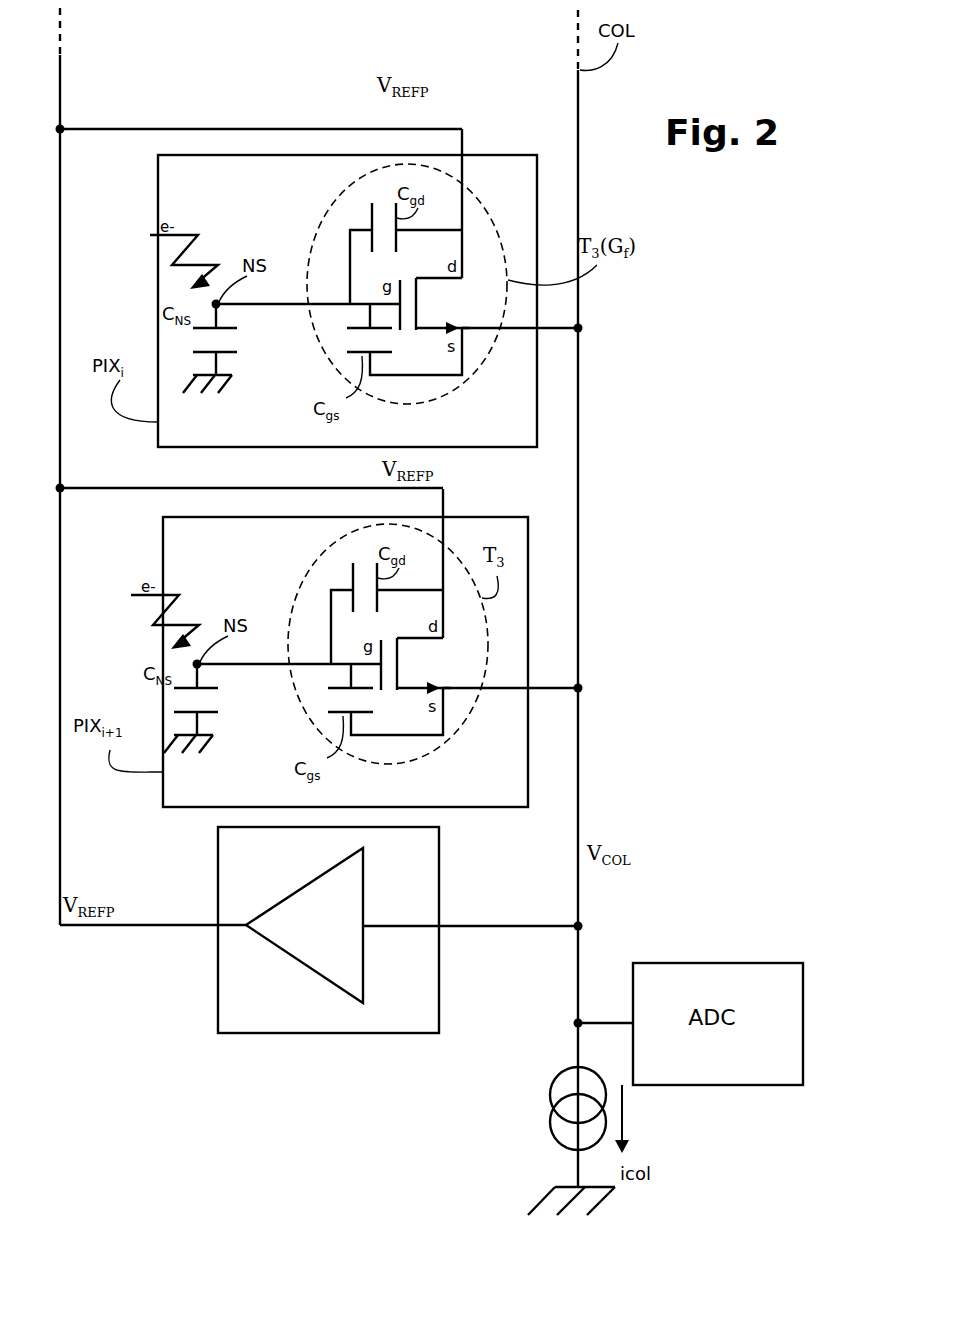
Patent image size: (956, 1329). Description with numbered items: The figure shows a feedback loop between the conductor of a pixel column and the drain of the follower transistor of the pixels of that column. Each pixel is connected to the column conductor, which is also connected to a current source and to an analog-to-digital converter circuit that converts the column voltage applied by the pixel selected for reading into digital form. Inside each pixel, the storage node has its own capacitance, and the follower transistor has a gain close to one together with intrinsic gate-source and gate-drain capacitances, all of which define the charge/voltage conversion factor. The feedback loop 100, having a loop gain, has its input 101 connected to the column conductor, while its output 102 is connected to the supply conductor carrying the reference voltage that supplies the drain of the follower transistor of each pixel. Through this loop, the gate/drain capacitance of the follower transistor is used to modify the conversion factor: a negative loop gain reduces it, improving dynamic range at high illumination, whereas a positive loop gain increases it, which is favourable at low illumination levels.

The feedback loop 100 is at (262, 1033).
The input 101 is at (439, 926).
The output 102 is at (218, 925).